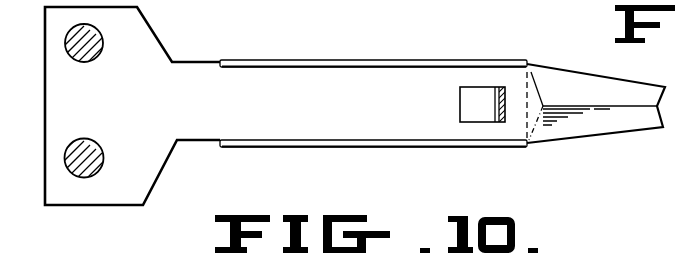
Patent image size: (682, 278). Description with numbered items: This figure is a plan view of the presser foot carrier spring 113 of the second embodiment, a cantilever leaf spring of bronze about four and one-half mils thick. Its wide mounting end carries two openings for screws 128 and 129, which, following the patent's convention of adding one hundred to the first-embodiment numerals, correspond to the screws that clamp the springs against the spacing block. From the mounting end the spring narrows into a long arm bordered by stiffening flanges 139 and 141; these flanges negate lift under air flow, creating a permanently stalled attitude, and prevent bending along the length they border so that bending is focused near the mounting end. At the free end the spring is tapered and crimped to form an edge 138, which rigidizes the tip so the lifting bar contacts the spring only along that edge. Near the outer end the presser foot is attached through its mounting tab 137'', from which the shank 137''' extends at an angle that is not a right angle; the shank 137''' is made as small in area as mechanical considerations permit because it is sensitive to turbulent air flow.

The presser foot carrier spring 113 is at (309, 117).
The screw 128 is at (95, 53).
The screw 129 is at (100, 155).
The mounting tab 137'' is at (473, 72).
The shank 137''' is at (474, 136).
The edge 138 is at (578, 106).
The flange 139 is at (318, 60).
The flange 141 is at (322, 147).